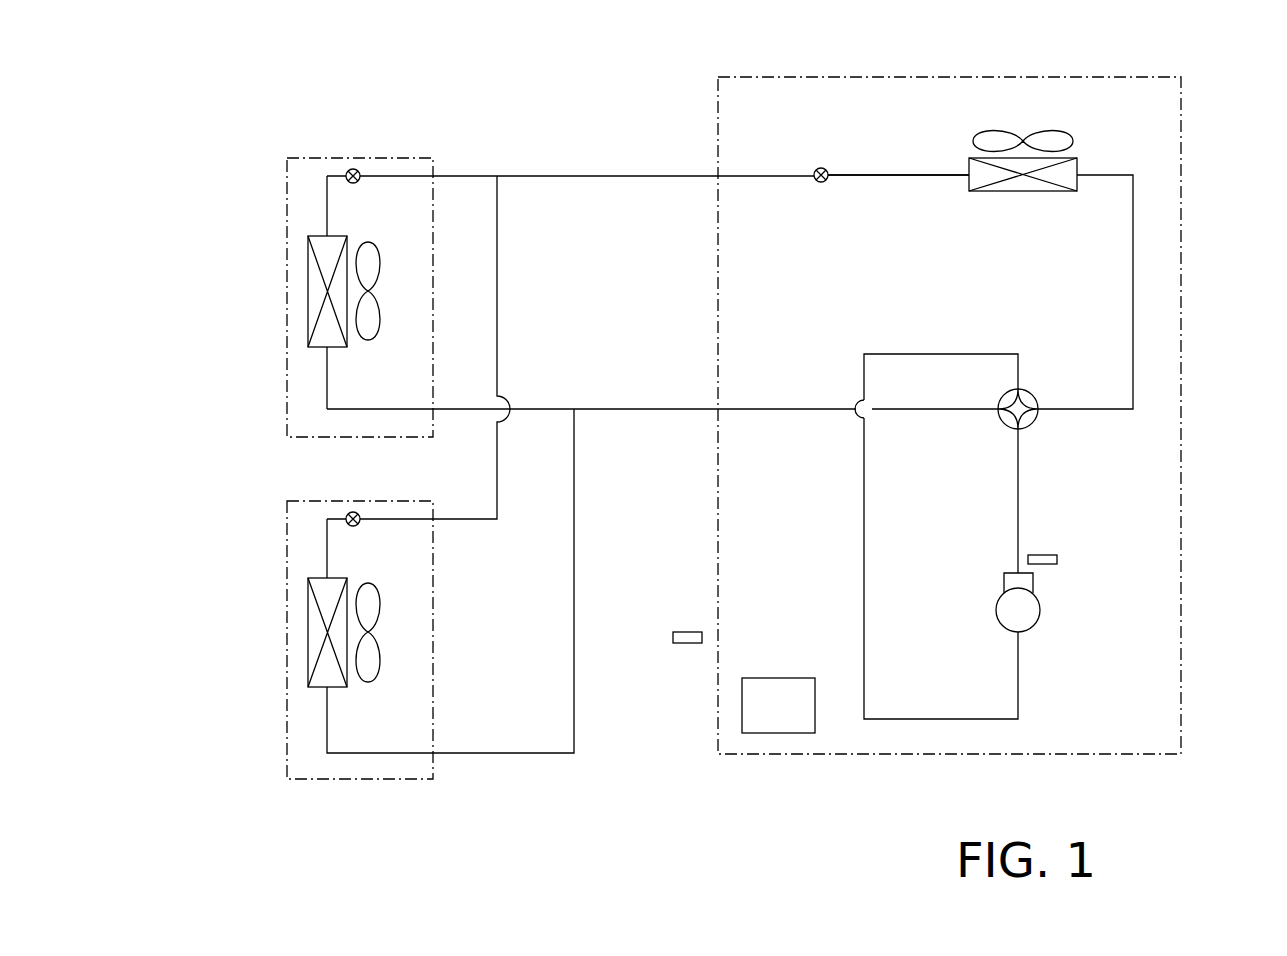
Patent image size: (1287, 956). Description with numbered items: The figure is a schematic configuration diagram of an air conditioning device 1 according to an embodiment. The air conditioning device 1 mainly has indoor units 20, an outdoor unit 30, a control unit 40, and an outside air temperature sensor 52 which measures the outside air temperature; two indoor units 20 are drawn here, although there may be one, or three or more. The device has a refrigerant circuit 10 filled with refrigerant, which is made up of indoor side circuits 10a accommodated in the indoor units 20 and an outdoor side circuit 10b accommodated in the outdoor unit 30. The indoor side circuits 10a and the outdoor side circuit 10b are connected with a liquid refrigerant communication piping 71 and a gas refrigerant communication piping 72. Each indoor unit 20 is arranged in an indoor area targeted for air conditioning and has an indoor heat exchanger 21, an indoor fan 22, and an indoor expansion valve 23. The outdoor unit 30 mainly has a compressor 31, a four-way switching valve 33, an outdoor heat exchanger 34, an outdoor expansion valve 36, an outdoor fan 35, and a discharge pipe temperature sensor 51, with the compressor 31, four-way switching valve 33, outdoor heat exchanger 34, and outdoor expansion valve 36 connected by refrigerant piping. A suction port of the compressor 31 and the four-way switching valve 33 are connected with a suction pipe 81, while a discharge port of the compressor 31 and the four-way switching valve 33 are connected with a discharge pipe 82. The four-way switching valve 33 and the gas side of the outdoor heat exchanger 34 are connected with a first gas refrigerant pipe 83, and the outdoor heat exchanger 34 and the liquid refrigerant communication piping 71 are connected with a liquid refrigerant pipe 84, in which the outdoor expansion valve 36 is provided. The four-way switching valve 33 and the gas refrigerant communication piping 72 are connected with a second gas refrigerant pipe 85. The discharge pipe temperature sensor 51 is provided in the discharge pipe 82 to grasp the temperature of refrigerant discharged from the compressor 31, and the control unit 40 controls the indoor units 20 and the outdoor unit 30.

The air conditioning device 1 is at (1240, 107).
The refrigerant circuit 10 is at (656, 422).
The indoor side circuit 10a is at (310, 396).
The outdoor side circuit 10b is at (770, 417).
The indoor unit 20 is at (388, 157).
The indoor heat exchanger 21 is at (307, 297).
The indoor fan 22 is at (378, 265).
The indoor expansion valve 23 is at (357, 184).
The outdoor unit 30 is at (1074, 76).
The compressor 31 is at (1034, 578).
The four-way switching valve 33 is at (1032, 392).
The outdoor heat exchanger 34 is at (1022, 193).
The outdoor fan 35 is at (1062, 133).
The outdoor expansion valve 36 is at (826, 168).
The control unit 40 is at (778, 734).
The discharge pipe temperature sensor 51 is at (1058, 556).
The outside air temperature sensor 52 is at (673, 636).
The liquid refrigerant communication piping 71 is at (650, 173).
The gas refrigerant communication piping 72 is at (648, 408).
The suction pipe 81 is at (864, 492).
The discharge pipe 82 is at (1020, 452).
The first gas refrigerant pipe 83 is at (1132, 300).
The liquid refrigerant pipe 84 is at (916, 172).
The second gas refrigerant pipe 85 is at (901, 411).